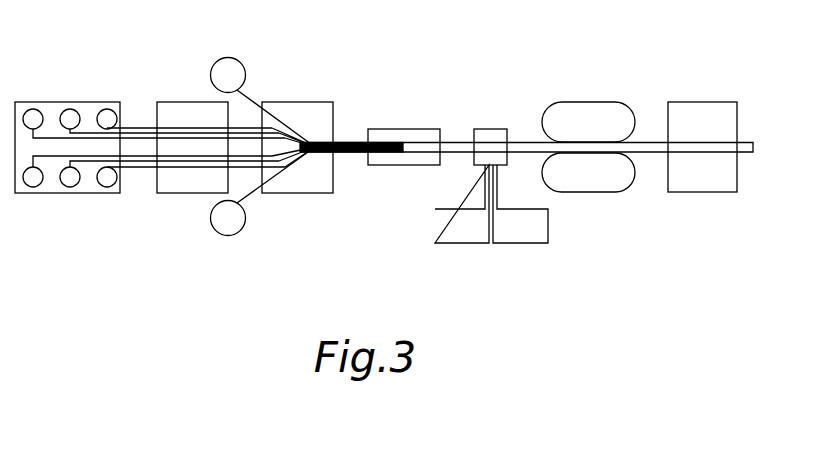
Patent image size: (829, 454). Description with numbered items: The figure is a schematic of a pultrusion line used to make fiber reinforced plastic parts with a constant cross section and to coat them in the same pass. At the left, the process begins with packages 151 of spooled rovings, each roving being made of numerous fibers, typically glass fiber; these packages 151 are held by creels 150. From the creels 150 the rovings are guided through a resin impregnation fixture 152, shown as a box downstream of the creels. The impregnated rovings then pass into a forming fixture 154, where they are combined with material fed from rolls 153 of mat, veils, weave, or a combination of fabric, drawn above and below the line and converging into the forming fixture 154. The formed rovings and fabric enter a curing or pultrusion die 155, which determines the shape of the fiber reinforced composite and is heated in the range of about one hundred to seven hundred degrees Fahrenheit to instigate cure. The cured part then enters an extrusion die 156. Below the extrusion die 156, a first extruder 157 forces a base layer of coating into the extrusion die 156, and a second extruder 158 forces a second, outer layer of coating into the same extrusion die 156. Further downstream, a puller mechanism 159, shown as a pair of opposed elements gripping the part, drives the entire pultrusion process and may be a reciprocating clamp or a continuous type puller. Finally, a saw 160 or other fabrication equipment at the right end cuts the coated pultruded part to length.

The creel 150 is at (55, 102).
The package 151 is at (70, 187).
The resin impregnation fixture 152 is at (194, 101).
The roll 153 is at (230, 57).
The forming fixture 154 is at (301, 101).
The pultrusion die 155 is at (405, 128).
The extrusion die 156 is at (493, 128).
The first extruder 157 is at (462, 244).
The second extruder 158 is at (521, 244).
The puller mechanism 159 is at (591, 101).
The saw 160 is at (705, 101).